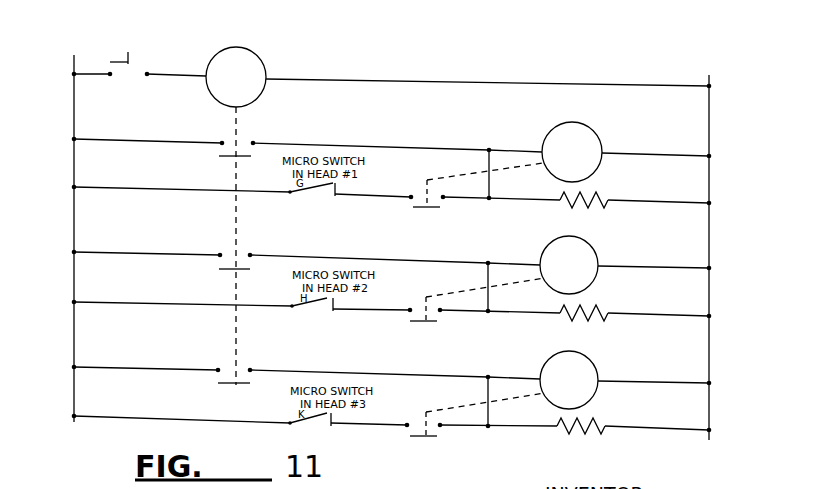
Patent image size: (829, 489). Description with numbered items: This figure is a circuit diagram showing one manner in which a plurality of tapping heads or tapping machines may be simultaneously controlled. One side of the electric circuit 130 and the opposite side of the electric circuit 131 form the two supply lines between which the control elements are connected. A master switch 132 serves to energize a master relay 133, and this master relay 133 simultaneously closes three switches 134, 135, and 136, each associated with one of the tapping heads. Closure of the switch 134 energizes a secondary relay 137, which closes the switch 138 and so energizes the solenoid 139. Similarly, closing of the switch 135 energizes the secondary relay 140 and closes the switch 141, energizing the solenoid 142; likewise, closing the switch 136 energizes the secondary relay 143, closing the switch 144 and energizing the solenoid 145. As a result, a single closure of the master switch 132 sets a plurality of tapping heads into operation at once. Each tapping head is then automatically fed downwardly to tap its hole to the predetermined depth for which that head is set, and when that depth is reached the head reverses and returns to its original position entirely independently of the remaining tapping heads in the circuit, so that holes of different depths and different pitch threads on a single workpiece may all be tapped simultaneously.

The one side of the electric circuit 130 is at (73, 159).
The opposite side of the electric circuit 131 is at (711, 128).
The master switch 132 is at (131, 62).
The master relay 133 is at (258, 57).
The switch 134 is at (240, 146).
The switch 135 is at (240, 258).
The switch 136 is at (240, 373).
The secondary relay 137 is at (592, 140).
The switch 138 is at (440, 207).
The solenoid 139 is at (597, 208).
The secondary relay 140 is at (595, 256).
The switch 141 is at (437, 321).
The solenoid 142 is at (600, 318).
The secondary relay 143 is at (595, 372).
The switch 144 is at (437, 432).
The solenoid 145 is at (598, 435).